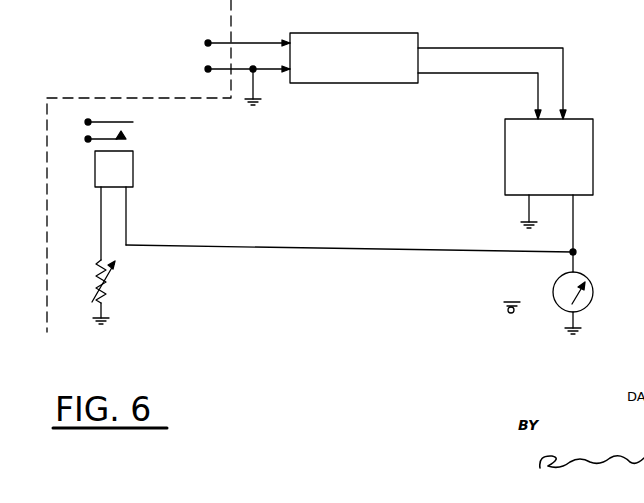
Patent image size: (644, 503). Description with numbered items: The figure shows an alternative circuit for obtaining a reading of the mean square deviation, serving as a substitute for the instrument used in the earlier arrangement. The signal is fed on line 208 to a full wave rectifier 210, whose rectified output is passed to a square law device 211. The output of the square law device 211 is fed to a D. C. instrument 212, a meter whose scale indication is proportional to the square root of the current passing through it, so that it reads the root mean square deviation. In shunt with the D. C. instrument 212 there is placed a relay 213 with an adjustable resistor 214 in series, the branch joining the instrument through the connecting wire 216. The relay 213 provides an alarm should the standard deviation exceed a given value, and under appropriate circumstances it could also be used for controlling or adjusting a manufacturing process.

The line 208 is at (241, 44).
The full wave rectifier 210 is at (333, 33).
The square law device 211 is at (593, 158).
The D. C. instrument 212 is at (587, 277).
The relay 213 is at (133, 168).
The adjustable resistor 214 is at (107, 291).
The connecting wire 216 is at (282, 245).